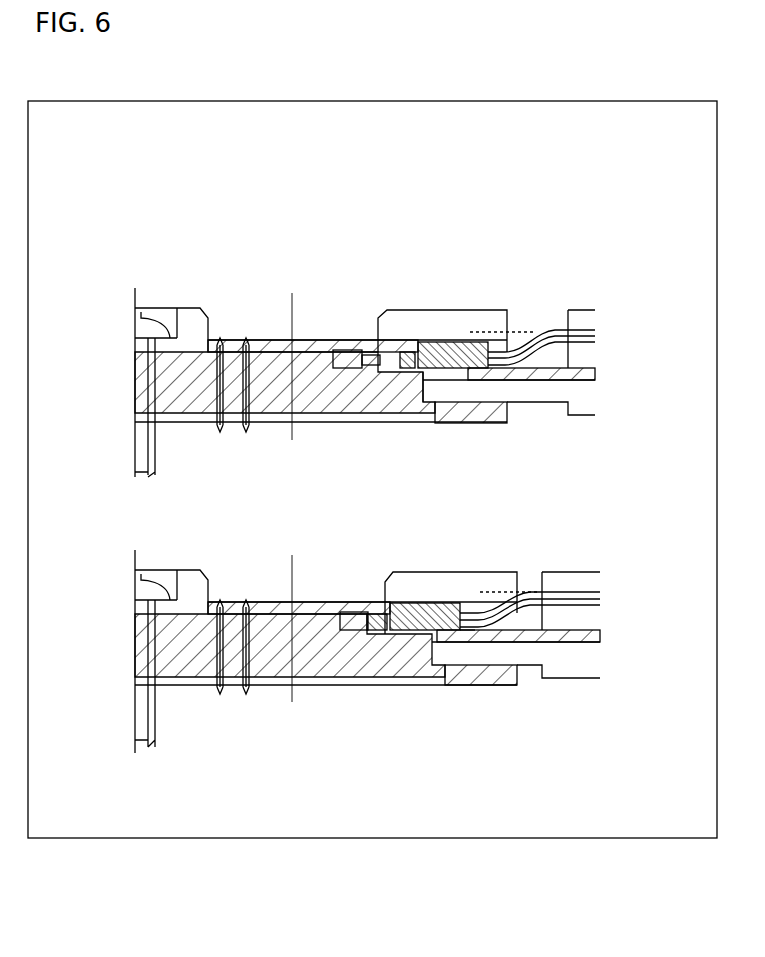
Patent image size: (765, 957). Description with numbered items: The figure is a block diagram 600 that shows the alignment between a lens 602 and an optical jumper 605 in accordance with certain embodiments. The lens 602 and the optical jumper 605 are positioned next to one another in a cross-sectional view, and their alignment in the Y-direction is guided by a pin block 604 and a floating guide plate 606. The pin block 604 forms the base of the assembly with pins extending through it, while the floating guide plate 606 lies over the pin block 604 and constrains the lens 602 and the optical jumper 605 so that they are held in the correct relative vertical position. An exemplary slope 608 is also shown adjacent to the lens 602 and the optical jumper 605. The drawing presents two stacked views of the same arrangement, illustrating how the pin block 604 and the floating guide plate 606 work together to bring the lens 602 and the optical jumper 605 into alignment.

The block diagram 600 is at (84, 101).
The lens 602 is at (263, 277).
The pin block 604 is at (348, 507).
The optical jumper 605 is at (458, 345).
The floating guide plate 606 is at (370, 223).
The slope 608 is at (508, 475).